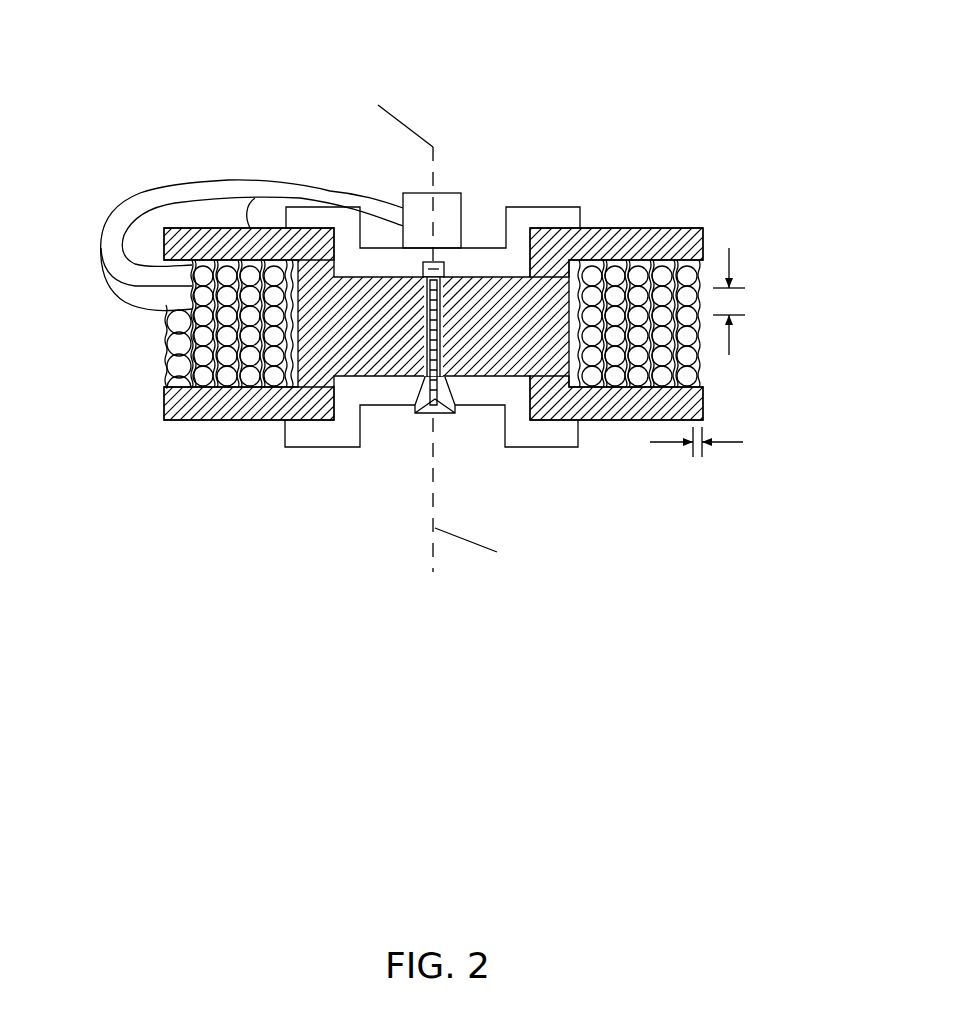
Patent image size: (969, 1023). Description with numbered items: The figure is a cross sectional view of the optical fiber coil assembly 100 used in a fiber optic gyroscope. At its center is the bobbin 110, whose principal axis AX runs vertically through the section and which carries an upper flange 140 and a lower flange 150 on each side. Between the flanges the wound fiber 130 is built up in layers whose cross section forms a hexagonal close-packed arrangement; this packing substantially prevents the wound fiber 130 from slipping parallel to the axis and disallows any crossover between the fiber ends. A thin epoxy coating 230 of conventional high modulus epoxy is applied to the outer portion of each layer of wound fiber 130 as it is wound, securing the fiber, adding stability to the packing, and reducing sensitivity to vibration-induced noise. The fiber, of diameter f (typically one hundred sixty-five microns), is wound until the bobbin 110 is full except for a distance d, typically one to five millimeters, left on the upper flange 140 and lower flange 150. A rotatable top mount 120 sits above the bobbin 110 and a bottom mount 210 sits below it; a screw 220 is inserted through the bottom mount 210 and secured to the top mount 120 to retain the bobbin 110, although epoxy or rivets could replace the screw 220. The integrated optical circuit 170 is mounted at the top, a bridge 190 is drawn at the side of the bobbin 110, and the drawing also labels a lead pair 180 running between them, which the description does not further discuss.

The optical fiber coil assembly 100 is at (473, 62).
The bobbin 110 is at (447, 320).
The rotatable top mount 120 is at (578, 208).
The wound fiber 130 is at (167, 338).
The upper flange 140 is at (692, 230).
The lower flange 150 is at (703, 398).
The integrated optical circuit (IOC) 170 is at (435, 193).
The lead pair 180 is at (306, 153).
The bridge 190 is at (192, 220).
The bottom mount 210 is at (597, 473).
The screw 220 is at (430, 417).
The epoxy coating 230 is at (167, 363).